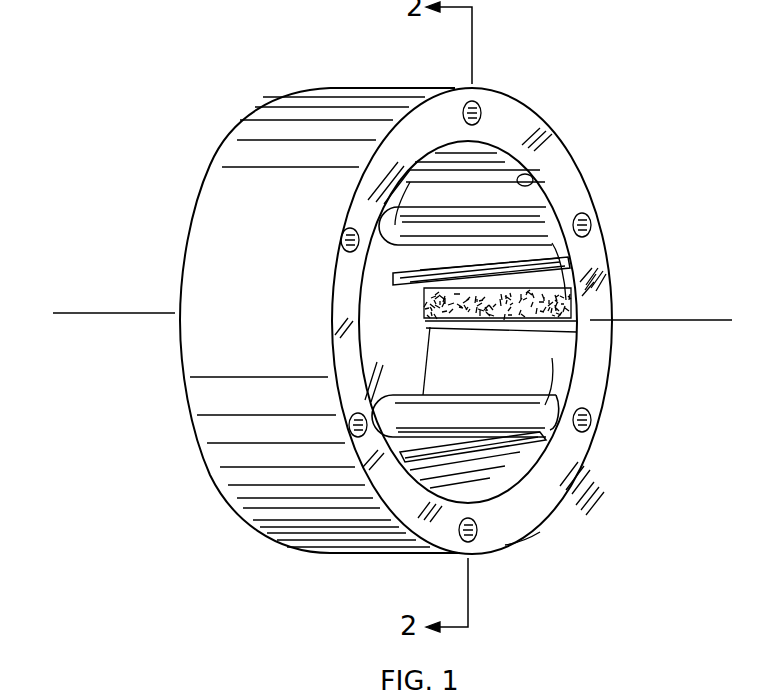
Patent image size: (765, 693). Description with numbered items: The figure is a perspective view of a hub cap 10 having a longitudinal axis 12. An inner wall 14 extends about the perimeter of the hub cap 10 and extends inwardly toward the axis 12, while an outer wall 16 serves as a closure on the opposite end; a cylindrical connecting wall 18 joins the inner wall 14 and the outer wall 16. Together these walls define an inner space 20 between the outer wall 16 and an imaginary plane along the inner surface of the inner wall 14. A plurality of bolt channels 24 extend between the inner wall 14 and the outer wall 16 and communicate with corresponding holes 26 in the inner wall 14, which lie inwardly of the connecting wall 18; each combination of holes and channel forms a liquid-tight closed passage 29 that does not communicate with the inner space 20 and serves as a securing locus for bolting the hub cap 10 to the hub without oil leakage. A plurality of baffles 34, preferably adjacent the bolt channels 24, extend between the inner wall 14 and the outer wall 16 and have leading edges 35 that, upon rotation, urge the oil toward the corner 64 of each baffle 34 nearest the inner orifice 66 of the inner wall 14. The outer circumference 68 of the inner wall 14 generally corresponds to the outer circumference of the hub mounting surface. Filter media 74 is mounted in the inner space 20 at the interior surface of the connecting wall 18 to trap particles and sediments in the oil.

The hub cap 10 is at (560, 58).
The longitudinal axis 12 is at (78, 313).
The inner wall 14 is at (330, 285).
The outer wall 16 is at (410, 366).
The cylindrical connecting wall 18 is at (268, 352).
The inner space 20 is at (552, 358).
The bolt channels 24 is at (550, 412).
The holes 26 is at (577, 218).
The closed passage 29 is at (468, 532).
The baffles 34 is at (540, 257).
The leading edge 35 is at (425, 316).
The corner 64 is at (590, 290).
The inner orifice 66 is at (540, 180).
The outer circumference 68 is at (523, 540).
The filter media 74 is at (570, 305).